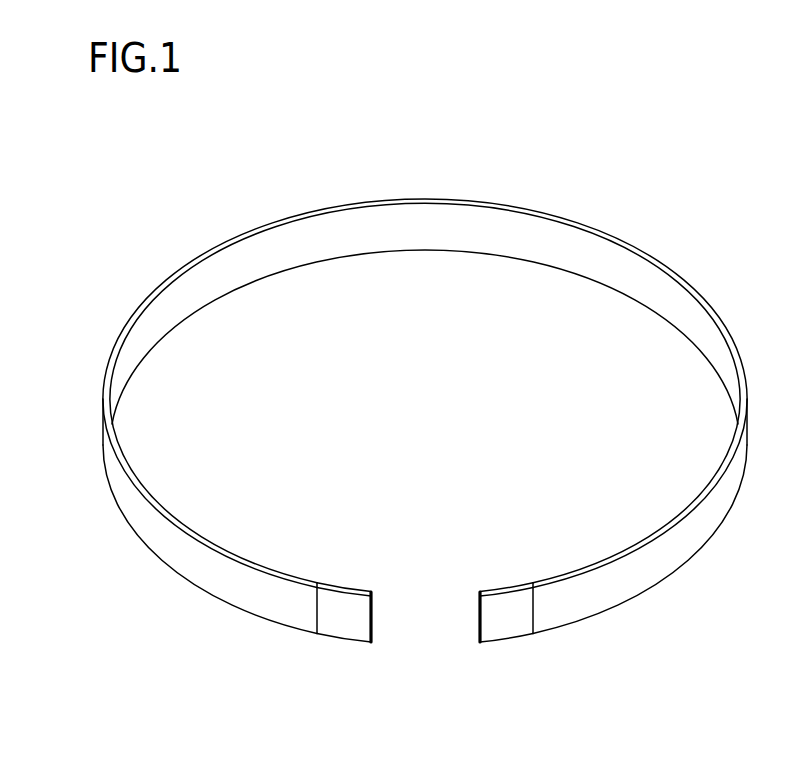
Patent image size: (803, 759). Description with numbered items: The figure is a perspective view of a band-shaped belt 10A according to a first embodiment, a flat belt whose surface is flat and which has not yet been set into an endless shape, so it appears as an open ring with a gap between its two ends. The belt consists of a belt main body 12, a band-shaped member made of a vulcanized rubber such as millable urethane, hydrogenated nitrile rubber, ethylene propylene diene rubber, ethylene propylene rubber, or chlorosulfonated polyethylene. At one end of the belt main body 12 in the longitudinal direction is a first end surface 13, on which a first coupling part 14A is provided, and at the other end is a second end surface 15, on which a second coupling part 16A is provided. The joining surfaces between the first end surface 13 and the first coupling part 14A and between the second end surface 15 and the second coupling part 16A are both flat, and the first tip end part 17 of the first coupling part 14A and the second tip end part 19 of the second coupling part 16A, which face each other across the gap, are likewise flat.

The band-shaped belt 10A is at (663, 197).
The belt main body 12 is at (646, 572).
The first end surface 13 is at (317, 607).
The first coupling part 14A is at (347, 623).
The second end surface 15 is at (533, 607).
The second coupling part 16A is at (505, 623).
The first tip end part 17 is at (372, 618).
The second tip end part 19 is at (479, 613).